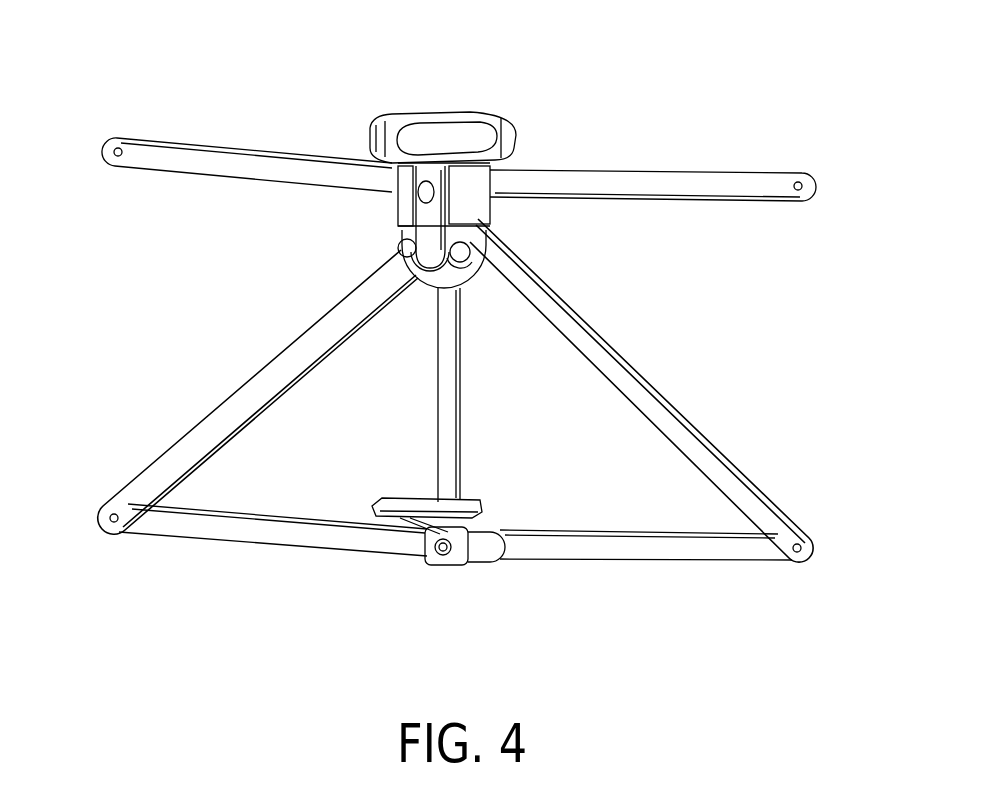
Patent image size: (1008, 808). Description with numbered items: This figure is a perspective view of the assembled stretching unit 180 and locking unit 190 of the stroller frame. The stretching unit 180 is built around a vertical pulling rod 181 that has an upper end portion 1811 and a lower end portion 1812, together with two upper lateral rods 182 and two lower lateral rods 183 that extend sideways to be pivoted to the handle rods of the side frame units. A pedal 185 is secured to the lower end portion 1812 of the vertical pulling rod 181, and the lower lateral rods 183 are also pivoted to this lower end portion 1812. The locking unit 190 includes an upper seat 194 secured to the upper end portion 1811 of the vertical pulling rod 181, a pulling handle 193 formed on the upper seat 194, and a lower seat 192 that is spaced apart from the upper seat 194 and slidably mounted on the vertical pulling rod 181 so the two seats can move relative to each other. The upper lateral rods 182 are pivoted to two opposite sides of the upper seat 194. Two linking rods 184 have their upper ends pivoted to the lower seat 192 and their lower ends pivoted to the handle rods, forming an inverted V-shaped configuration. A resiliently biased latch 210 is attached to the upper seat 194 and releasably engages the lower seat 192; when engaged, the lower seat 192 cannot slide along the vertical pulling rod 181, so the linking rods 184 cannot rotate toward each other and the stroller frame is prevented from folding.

The stretching unit 180 is at (725, 150).
The vertical pulling rod 181 is at (462, 434).
The upper end portion 1811 is at (462, 302).
The lower end portion 1812 is at (455, 500).
The upper lateral rods 182 is at (237, 162).
The lower lateral rods 183 is at (270, 530).
The linking rods 184 is at (155, 480).
The pedal 185 is at (390, 527).
The locking unit 190 is at (519, 114).
The lower seat 192 is at (462, 273).
The pulling handle 193 is at (448, 112).
The upper seat 194 is at (480, 207).
The resiliently biased latch 210 is at (427, 233).